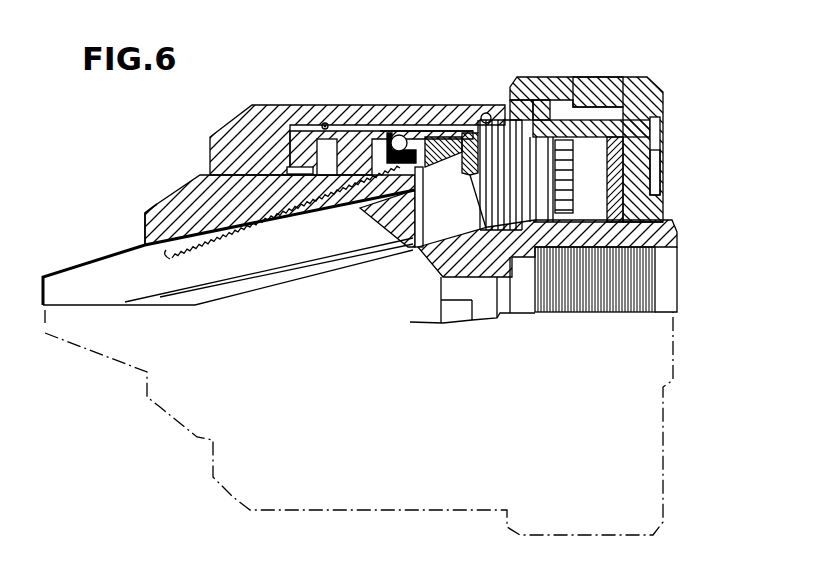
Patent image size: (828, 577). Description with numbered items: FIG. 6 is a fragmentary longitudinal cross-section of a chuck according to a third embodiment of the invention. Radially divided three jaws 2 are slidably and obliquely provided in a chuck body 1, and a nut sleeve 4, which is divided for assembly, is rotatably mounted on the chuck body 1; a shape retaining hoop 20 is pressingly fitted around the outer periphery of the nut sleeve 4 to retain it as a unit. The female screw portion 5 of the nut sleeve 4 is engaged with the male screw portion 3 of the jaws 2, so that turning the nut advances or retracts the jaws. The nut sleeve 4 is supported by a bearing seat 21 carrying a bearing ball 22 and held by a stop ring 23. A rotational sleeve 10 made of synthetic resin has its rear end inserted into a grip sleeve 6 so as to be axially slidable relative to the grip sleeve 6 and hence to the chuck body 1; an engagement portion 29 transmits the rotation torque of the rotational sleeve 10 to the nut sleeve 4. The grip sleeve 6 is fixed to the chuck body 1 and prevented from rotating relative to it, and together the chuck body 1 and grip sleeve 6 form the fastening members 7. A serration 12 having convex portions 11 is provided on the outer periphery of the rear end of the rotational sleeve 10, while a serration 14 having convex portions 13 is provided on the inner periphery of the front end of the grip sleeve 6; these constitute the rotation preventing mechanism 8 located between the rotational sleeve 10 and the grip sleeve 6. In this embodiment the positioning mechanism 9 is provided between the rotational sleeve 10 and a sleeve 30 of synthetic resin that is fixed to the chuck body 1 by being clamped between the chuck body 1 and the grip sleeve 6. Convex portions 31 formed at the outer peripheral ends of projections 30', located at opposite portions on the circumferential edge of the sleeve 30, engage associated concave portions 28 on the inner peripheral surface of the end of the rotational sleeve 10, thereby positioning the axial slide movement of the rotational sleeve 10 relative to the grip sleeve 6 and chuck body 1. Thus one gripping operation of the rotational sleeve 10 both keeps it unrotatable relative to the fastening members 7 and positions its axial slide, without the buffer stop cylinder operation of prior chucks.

The chuck body 1 is at (190, 203).
The jaws 2 is at (88, 285).
The male screw portion 3 is at (163, 214).
The nut sleeve 4 is at (330, 128).
The female screw portion 5 is at (428, 212).
The grip sleeve 6 is at (660, 205).
The fastening members 7 is at (682, 242).
The rotation preventing mechanism 8 is at (592, 111).
The positioning mechanism 9 is at (522, 150).
The rotational sleeve 10 is at (214, 138).
The convex portions 11 is at (512, 112).
The serration 12 is at (526, 78).
The convex portions 13 is at (556, 118).
The serration 14 is at (590, 78).
The shape retaining hoop 20 is at (323, 125).
The bearing seat 21 is at (421, 124).
The bearing ball 22 is at (398, 135).
The stop ring 23 is at (464, 104).
The concave portions 28 is at (488, 108).
The engagement portion 29 is at (340, 152).
The sleeve 30 is at (678, 156).
The projections 30' is at (682, 172).
The convex portions 31 is at (543, 110).